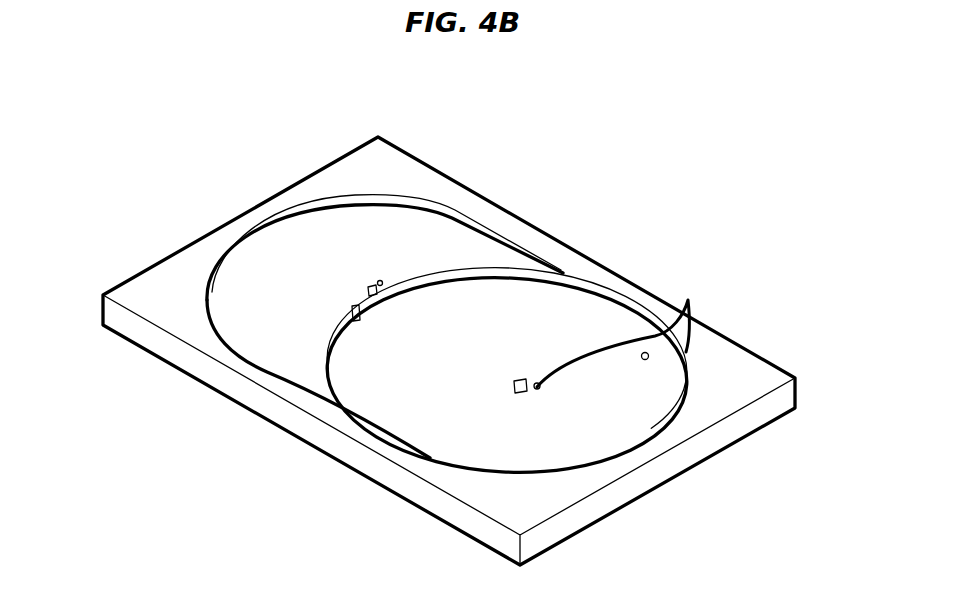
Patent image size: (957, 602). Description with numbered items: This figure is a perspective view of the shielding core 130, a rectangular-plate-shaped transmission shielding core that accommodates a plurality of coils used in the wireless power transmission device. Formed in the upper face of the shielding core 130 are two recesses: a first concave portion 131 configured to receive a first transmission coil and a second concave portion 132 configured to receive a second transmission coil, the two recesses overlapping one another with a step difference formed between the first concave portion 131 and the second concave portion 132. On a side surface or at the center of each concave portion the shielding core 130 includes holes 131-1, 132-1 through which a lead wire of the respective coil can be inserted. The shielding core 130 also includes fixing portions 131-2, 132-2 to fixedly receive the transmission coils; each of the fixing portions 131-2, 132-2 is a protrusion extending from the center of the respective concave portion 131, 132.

The shielding core 130 is at (413, 170).
The first concave portion 131 is at (566, 305).
The hole 131-1 is at (648, 352).
The fixing portion 131-2 is at (537, 390).
The second concave portion 132 is at (457, 237).
The hole 132-1 is at (357, 320).
The fixing portion 132-2 is at (372, 290).